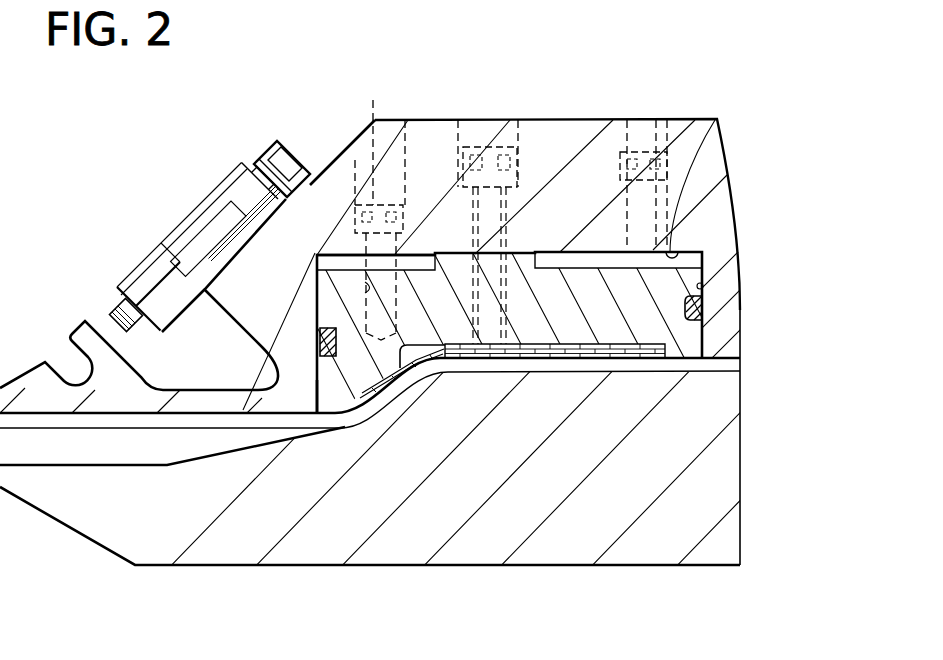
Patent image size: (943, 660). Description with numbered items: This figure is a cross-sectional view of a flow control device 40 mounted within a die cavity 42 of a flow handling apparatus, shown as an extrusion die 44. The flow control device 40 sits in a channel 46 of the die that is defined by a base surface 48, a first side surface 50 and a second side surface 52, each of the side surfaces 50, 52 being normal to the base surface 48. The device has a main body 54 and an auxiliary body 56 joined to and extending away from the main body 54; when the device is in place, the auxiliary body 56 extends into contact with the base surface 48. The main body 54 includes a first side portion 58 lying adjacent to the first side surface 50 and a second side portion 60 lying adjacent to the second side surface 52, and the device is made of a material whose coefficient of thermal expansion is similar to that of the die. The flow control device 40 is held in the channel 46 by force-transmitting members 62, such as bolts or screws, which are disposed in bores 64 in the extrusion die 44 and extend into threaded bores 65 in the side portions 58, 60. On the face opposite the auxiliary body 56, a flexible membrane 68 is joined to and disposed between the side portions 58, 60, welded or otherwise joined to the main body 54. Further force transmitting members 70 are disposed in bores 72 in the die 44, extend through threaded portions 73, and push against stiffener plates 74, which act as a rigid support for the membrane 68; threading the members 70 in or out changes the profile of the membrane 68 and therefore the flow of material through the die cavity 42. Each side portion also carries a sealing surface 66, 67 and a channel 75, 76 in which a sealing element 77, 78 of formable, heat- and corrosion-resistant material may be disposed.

The flow control device 40 is at (333, 421).
The die cavity 42 is at (481, 362).
The extrusion die 44 is at (338, 153).
The channel 46 is at (705, 256).
The base surface 48 is at (700, 119).
The first side surface 50 is at (315, 273).
The second side surface 52 is at (683, 284).
The main body 54 is at (447, 262).
The auxiliary body 56 is at (527, 252).
The first side portion 58 is at (315, 303).
The second side portion 60 is at (703, 277).
The force-transmitting members 62 is at (627, 120).
The bores 64 is at (402, 148).
The threaded bores 65 is at (317, 258).
The sealing surface 66 is at (317, 385).
The sealing surface 67 is at (705, 327).
The flexible membrane 68 is at (660, 375).
The force transmitting members 70 is at (490, 150).
The bores 72 is at (505, 150).
The threaded portions 73 is at (480, 150).
The stiffener plates 74 is at (556, 354).
The channel 75 is at (317, 350).
The channel 76 is at (704, 310).
The sealing element 77 is at (317, 342).
The sealing element 78 is at (705, 332).